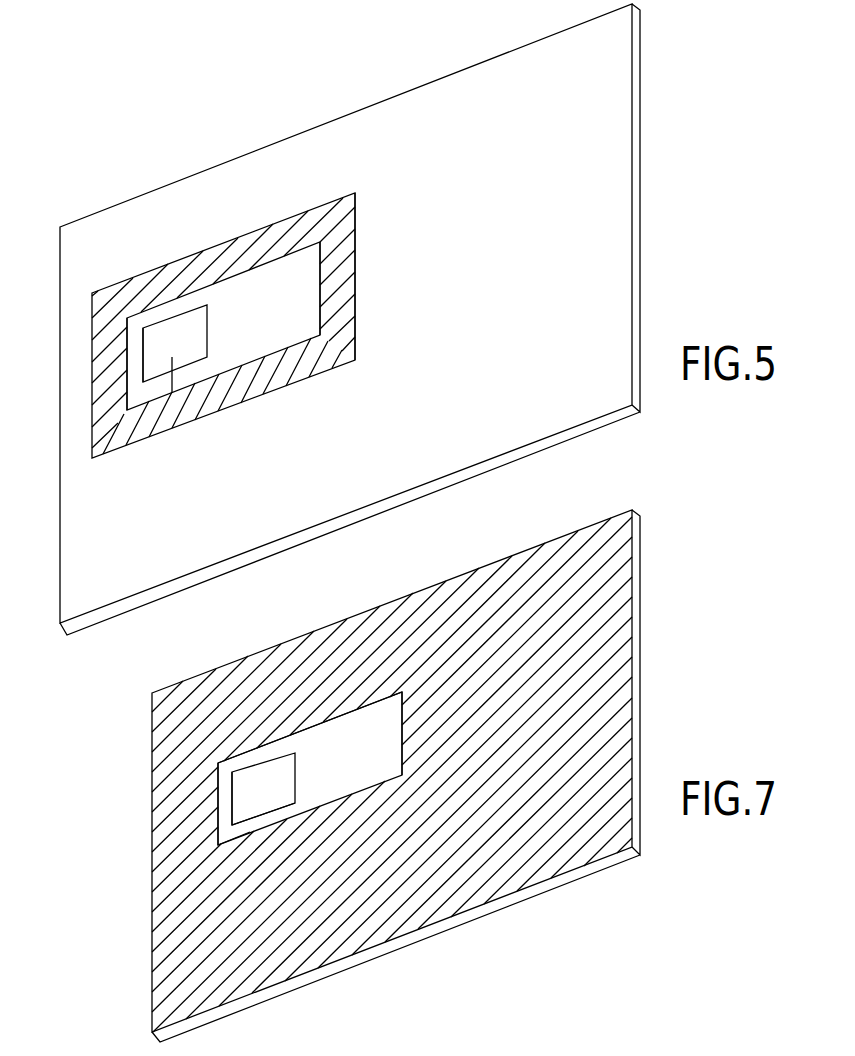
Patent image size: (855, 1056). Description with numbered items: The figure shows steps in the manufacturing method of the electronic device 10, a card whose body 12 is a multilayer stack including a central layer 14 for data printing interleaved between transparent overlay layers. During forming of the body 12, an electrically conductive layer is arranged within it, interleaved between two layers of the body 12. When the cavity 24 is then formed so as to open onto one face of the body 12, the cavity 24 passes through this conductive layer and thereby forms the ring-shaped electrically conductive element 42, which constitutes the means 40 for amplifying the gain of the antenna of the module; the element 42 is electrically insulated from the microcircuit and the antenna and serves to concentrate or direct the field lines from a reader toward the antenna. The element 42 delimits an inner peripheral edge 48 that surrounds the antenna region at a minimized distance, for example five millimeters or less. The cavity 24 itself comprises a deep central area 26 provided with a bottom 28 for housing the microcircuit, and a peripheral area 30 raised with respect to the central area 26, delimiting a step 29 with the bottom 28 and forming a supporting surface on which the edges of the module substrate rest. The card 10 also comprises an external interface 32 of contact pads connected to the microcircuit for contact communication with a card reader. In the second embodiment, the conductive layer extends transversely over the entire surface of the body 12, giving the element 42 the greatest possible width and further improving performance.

In FIG. 5, the device 10 is at (388, 319).
In FIG. 7, the device 10 is at (444, 758).
In FIG. 5, the body 12 is at (603, 276).
In FIG. 7, the body 12 is at (610, 760).
In FIG. 5, the central layer 14 is at (614, 188).
In FIG. 7, the central layer 14 is at (625, 640).
In FIG. 5, the cavity 24 is at (232, 307).
In FIG. 7, the cavity 24 is at (297, 757).
In FIG. 5, the deep central area 26 is at (153, 343).
In FIG. 7, the deep central area 26 is at (248, 792).
In FIG. 5, the bottom 28 is at (172, 393).
In FIG. 7, the bottom 28 is at (250, 832).
In FIG. 5, the step 29 is at (142, 372).
In FIG. 7, the step 29 is at (243, 767).
In FIG. 5, the peripheral area 30 is at (258, 292).
In FIG. 7, the peripheral area 30 is at (330, 747).
In FIG. 7, the external interface 32 is at (253, 807).
In FIG. 5, the means for amplifying the gain of the antenna 40 is at (316, 226).
In FIG. 7, the means for amplifying the gain of the antenna 40 is at (210, 717).
In FIG. 5, the electrically conductive element 42 is at (342, 248).
In FIG. 7, the electrically conductive element 42 is at (414, 624).
In FIG. 5, the inner peripheral edge 48 is at (318, 309).
In FIG. 7, the inner peripheral edge 48 is at (402, 713).